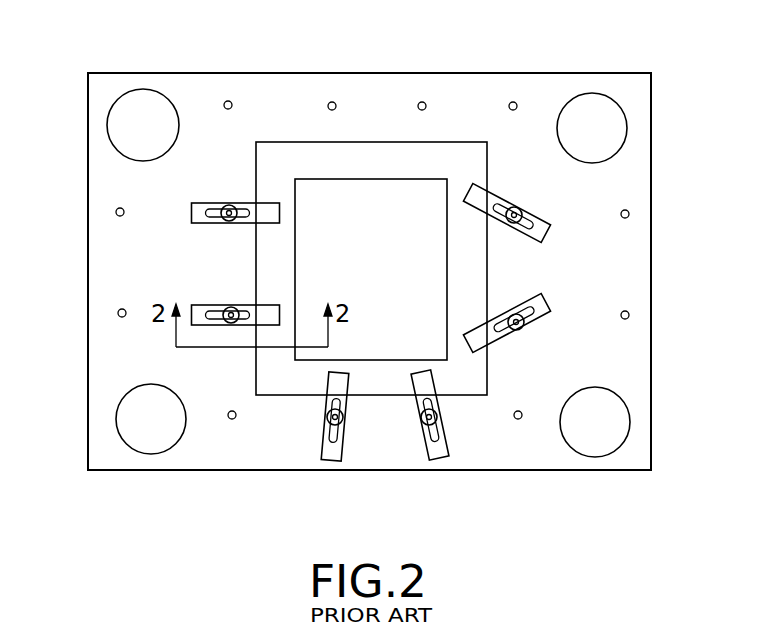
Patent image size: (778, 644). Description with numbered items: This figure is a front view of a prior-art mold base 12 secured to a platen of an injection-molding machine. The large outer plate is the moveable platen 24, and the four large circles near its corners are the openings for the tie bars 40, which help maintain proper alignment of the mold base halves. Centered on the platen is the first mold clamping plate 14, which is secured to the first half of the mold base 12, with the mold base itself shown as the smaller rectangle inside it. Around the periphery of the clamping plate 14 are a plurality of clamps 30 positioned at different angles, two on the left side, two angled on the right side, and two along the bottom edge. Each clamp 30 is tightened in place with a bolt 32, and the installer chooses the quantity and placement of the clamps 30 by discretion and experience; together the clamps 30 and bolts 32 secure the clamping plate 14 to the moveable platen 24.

The mold base 12 is at (380, 178).
The first mold clamping plate 14 is at (300, 141).
The moveable platen 24 is at (490, 73).
The clamps 30 is at (192, 305).
The bolts 32 is at (229, 223).
The tie bars 40 is at (109, 115).